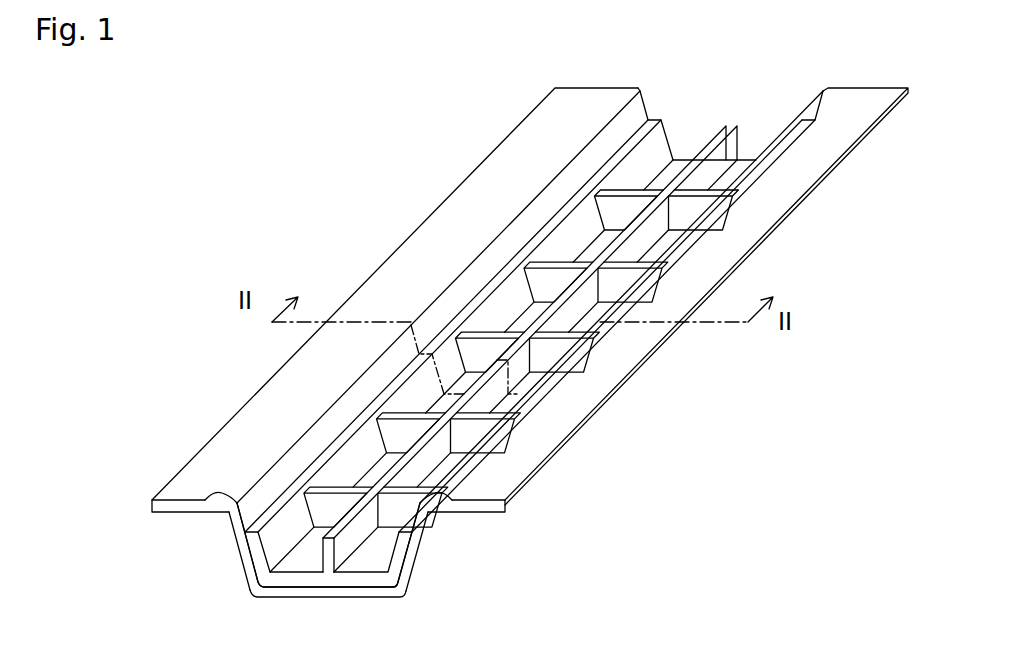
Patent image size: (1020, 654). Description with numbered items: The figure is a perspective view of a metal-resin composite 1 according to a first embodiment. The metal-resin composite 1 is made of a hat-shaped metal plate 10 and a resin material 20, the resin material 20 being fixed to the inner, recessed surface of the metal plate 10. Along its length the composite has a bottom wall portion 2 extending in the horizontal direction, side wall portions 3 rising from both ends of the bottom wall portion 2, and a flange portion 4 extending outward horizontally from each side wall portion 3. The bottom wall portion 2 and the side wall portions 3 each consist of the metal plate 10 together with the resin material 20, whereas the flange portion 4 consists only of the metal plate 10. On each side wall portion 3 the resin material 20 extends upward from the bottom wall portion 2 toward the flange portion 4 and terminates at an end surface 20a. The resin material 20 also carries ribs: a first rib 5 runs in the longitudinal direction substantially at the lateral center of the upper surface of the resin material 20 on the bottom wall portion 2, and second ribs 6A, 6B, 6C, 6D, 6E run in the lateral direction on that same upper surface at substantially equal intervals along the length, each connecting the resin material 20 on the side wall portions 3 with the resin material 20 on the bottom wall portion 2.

The metal-resin composite 1 is at (408, 146).
The bottom wall portion 2 is at (345, 597).
The side wall portion 3 is at (240, 548).
The flange portion 4 is at (218, 450).
The first rib 5 is at (737, 137).
The second rib 6A is at (412, 512).
The second rib 6B is at (477, 428).
The second rib 6C is at (557, 348).
The second rib 6D is at (627, 260).
The second rib 6E is at (700, 205).
The metal plate 10 is at (268, 413).
The resin material 20 is at (262, 590).
The end surface 20a is at (205, 497).